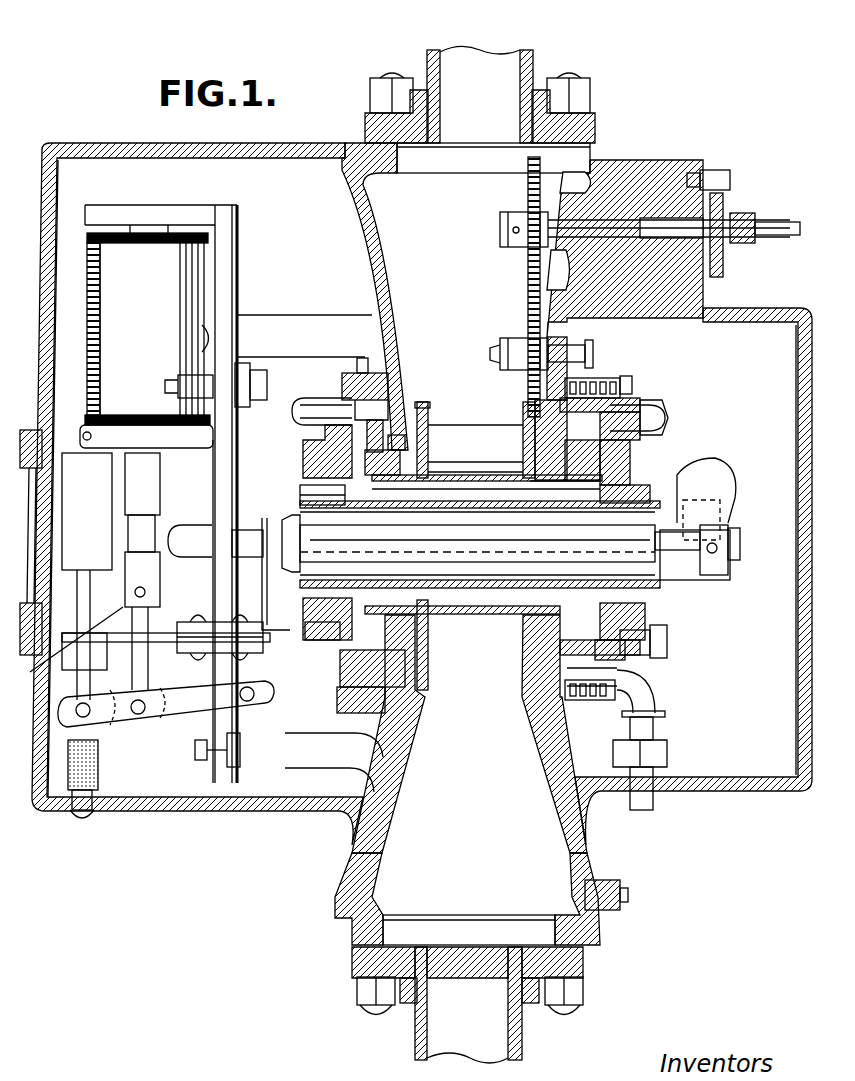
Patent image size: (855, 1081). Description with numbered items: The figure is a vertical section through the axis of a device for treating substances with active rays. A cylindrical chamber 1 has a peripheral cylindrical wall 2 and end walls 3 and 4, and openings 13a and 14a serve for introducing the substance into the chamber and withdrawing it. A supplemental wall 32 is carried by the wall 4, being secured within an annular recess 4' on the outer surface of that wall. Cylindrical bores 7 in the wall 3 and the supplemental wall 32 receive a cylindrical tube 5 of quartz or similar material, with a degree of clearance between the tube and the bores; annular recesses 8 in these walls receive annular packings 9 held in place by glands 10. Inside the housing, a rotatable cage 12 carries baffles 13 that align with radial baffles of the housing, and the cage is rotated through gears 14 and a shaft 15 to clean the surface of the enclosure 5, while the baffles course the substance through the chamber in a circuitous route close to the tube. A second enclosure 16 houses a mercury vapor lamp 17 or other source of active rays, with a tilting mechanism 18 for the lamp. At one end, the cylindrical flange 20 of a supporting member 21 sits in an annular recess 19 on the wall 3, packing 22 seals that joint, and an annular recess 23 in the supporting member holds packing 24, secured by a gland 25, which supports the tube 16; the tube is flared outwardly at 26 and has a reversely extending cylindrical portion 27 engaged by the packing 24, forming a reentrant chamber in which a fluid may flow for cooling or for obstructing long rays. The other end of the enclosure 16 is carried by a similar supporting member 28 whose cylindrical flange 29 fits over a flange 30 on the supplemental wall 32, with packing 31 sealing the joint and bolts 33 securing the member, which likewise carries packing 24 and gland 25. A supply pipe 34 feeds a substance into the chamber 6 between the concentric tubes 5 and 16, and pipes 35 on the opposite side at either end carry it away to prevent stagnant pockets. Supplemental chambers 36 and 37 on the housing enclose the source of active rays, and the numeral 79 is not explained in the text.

The cylindrical chamber 1 is at (420, 200).
The peripheral cylindrical wall 2 is at (455, 175).
The end wall 3 is at (393, 292).
The end wall 4 is at (522, 257).
The annular recess 4' is at (530, 365).
The cylindrical tube 5 is at (466, 478).
The chamber 6 is at (486, 500).
The cylindrical bore 7 is at (422, 478).
The annular recess 8 is at (425, 447).
The annular packing 9 is at (388, 478).
The gland 10 is at (340, 410).
The rotatable cage 12 is at (424, 405).
The baffle 13 is at (462, 422).
The opening 13a is at (470, 65).
The gear 14 is at (530, 327).
The opening 14a is at (445, 1030).
The shaft 15 is at (768, 228).
The second enclosure 16 is at (490, 575).
The mercury vapor lamp 17 is at (630, 560).
The tilting mechanism 18 is at (138, 563).
The annular recess 19 is at (370, 372).
The cylindrical flange 20 is at (355, 375).
The supporting member 21 is at (300, 450).
The packing 22 is at (390, 388).
The annular recess 23 is at (312, 648).
The packing 24 is at (630, 492).
The gland 25 is at (660, 470).
The flared portion 26 is at (300, 497).
The reversely extending cylindrical portion 27 is at (335, 572).
The supporting member 28 is at (640, 442).
The cylindrical flange 29 is at (602, 378).
The flange 30 is at (645, 410).
The packing 31 is at (590, 378).
The supplemental wall 32 is at (532, 412).
The bolt 33 is at (628, 398).
The supply pipe 34 is at (650, 803).
The pipe 35 is at (650, 416).
The supplemental chamber 36 is at (757, 768).
The supplemental chamber 37 is at (143, 775).
The collar 79 is at (558, 478).